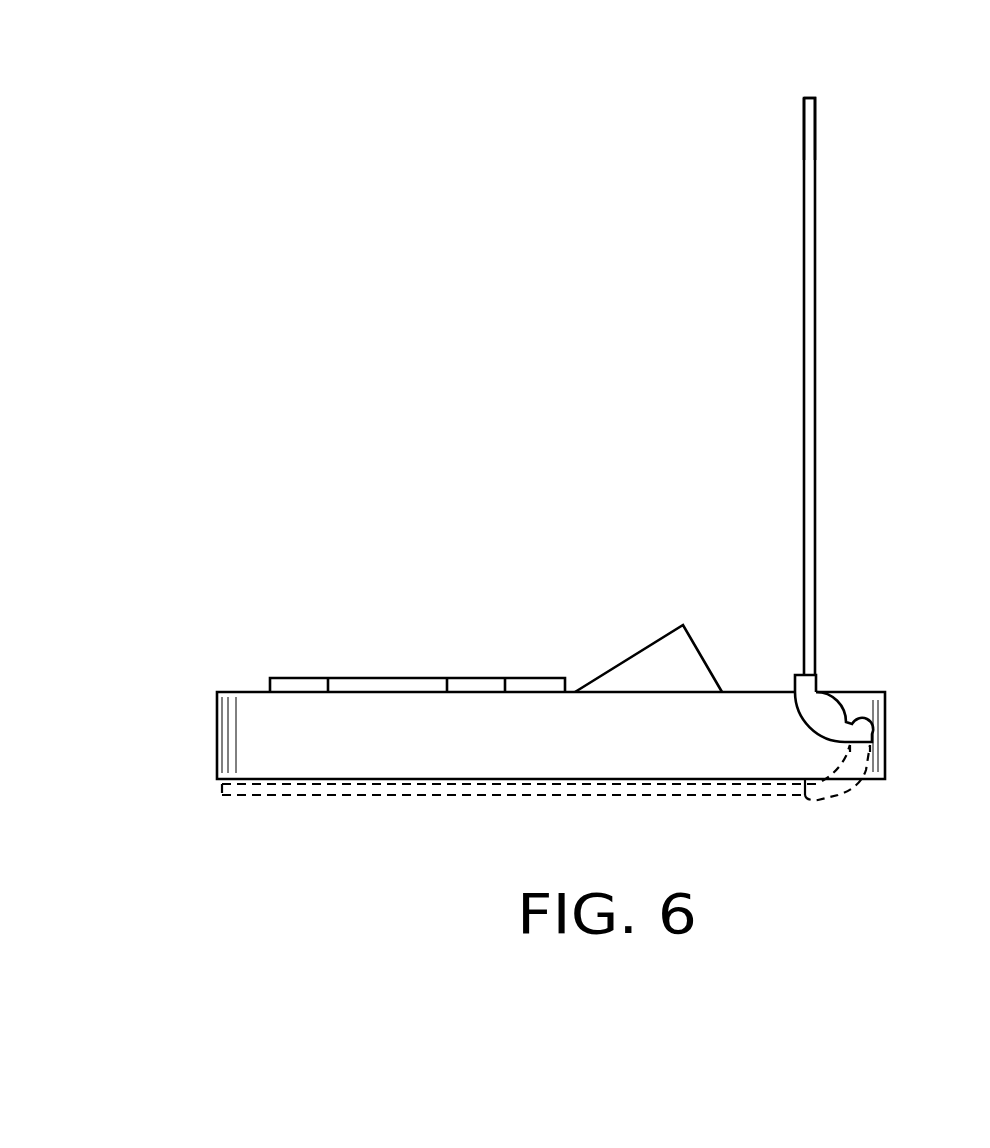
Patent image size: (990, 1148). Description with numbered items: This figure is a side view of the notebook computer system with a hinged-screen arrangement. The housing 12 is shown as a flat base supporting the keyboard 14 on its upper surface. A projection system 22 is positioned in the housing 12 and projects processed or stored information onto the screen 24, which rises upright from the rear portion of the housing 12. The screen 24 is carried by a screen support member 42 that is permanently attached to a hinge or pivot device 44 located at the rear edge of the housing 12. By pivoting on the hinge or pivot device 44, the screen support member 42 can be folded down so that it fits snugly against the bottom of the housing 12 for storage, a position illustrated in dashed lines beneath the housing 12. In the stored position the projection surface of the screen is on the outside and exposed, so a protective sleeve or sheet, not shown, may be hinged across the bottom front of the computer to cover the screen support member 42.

The housing 12 is at (250, 725).
The keyboard 14 is at (310, 678).
The projection system 22 is at (610, 670).
The screen 24 is at (805, 175).
The screen support member 42 is at (817, 142).
The hinge or pivot device 44 is at (837, 718).